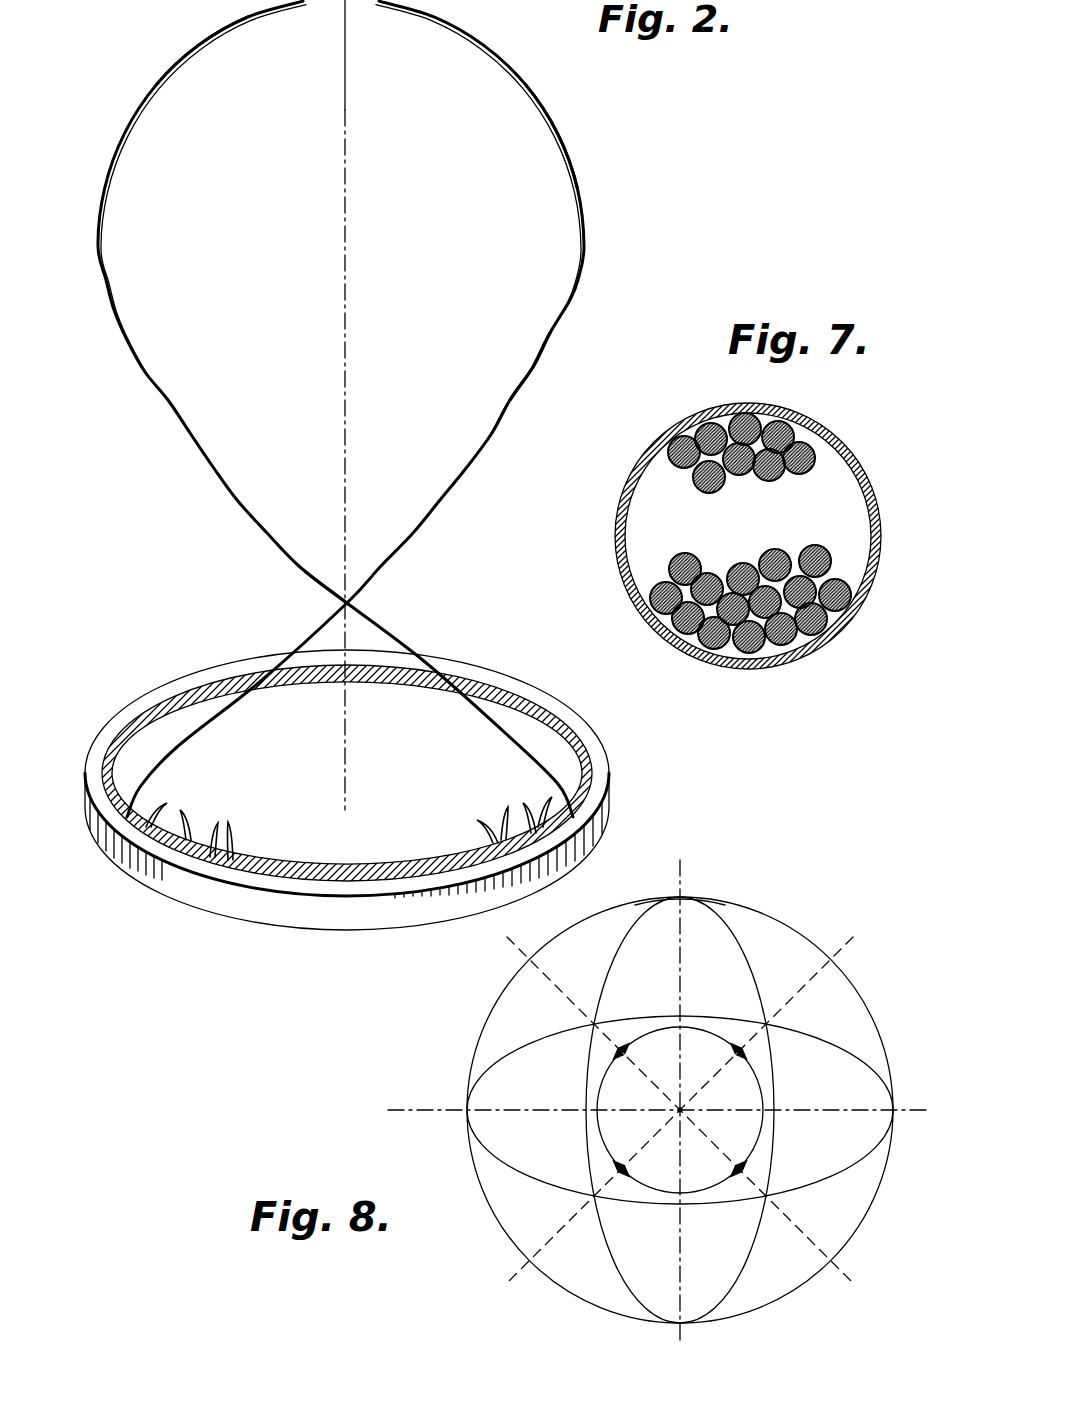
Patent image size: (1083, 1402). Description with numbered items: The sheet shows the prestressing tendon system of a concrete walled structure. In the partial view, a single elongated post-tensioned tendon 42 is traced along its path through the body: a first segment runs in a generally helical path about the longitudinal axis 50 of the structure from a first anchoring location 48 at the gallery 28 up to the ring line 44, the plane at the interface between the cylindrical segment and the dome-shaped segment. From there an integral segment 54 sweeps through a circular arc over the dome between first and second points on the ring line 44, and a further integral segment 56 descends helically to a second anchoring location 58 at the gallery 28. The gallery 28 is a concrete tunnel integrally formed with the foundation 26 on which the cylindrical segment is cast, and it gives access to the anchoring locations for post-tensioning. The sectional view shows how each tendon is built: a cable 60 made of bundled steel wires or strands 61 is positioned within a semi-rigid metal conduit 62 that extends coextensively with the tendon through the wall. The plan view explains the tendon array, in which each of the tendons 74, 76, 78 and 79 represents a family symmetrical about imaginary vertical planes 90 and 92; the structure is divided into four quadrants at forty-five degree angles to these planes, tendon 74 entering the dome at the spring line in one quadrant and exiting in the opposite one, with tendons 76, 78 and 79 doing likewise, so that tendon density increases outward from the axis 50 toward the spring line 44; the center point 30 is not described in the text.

In FIG. 2, the foundation 26 is at (369, 820).
In FIG. 2, the gallery 28 is at (292, 915).
In FIG. 8, the center point 30 is at (676, 1116).
In FIG. 2, the tendon 42 is at (190, 450).
In FIG. 7, the tendon 42 is at (745, 546).
In FIG. 2, the ring line 44 is at (563, 138).
In FIG. 8, the ring line 44 is at (800, 929).
In FIG. 2, the first anchoring location 48 is at (607, 808).
In FIG. 2, the longitudinal axis 50 is at (345, 290).
In FIG. 2, the integral segment 54 is at (172, 60).
In FIG. 2, the integral segment 56 is at (522, 392).
In FIG. 2, the second anchoring location 58 is at (107, 820).
In FIG. 7, the cable 60 is at (692, 483).
In FIG. 7, the strands 61 is at (669, 455).
In FIG. 7, the conduit 62 is at (808, 643).
In FIG. 8, the tendon 74 is at (735, 952).
In FIG. 8, the tendon 76 is at (813, 1175).
In FIG. 8, the tendon 78 is at (624, 1272).
In FIG. 8, the tendon 79 is at (517, 1051).
In FIG. 8, the vertical plane 90 is at (680, 885).
In FIG. 8, the vertical plane 92 is at (410, 1108).